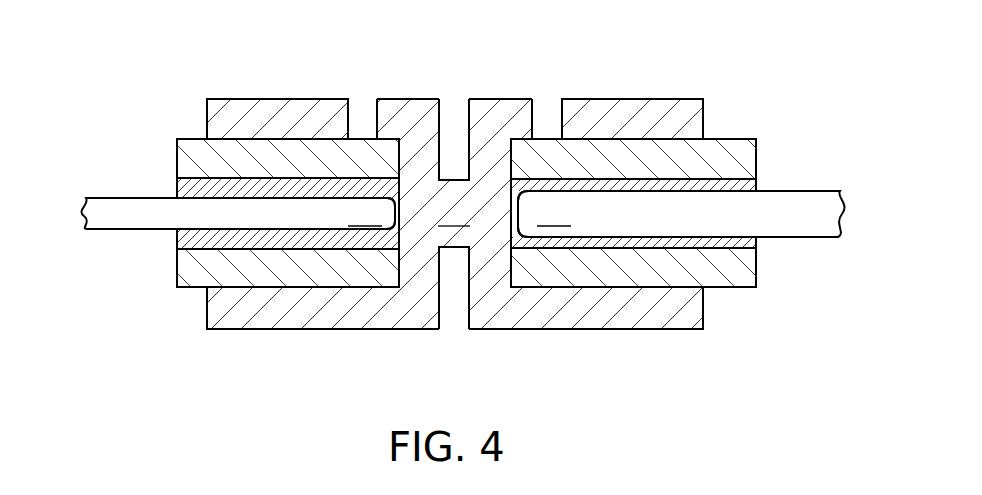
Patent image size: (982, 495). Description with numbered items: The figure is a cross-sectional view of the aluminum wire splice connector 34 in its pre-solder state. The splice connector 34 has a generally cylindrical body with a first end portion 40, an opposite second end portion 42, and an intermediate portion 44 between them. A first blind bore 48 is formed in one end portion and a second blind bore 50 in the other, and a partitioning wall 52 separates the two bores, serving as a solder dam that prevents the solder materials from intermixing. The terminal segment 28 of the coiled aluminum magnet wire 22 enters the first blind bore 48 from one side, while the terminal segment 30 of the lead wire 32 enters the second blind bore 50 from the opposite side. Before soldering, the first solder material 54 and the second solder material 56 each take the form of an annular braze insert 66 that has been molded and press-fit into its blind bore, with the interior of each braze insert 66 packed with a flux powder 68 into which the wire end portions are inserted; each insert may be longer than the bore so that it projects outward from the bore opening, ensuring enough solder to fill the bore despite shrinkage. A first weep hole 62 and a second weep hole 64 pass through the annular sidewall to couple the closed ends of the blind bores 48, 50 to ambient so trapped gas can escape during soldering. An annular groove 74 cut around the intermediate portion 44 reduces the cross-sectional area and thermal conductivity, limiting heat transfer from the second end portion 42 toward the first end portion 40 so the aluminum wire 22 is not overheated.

The coiled aluminum magnet wire 22 is at (107, 203).
The terminal segment of coiled aluminum magnet wire 28 is at (371, 213).
The terminal segment of lead wire 30 is at (544, 214).
The lead wire 32 is at (815, 195).
The aluminum wire splice connector 34 is at (651, 90).
The first end portion 40 is at (228, 107).
The second end portion 42 is at (685, 100).
The intermediate portion 44 is at (430, 108).
The first blind bore 48 is at (257, 289).
The second blind bore 50 is at (642, 288).
The partitioning wall 52 is at (454, 265).
The first solder material 54 is at (178, 293).
The second solder material 56 is at (752, 296).
The first weep hole 62 is at (362, 107).
The second weep hole 64 is at (547, 100).
The annular braze insert 66 is at (313, 277).
The flux powder 68 is at (177, 247).
The annular groove 74 is at (462, 105).